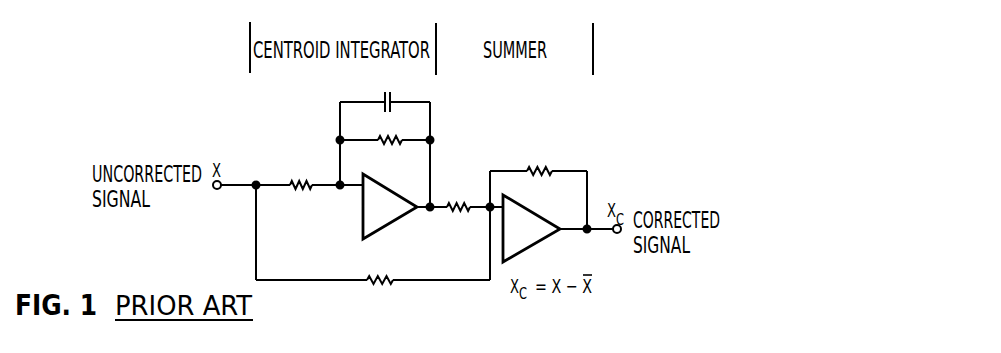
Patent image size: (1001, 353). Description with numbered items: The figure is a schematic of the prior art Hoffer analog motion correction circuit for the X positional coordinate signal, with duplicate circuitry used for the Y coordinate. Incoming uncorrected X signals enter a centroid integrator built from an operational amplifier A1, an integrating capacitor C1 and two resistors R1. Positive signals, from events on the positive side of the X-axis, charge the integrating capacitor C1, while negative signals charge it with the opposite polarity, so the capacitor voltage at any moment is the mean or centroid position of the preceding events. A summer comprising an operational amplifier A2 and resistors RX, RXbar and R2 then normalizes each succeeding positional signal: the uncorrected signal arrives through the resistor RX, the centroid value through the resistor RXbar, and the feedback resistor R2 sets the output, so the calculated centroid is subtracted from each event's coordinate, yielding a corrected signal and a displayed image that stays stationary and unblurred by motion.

The resistor R1 is at (362, 162).
The integrating capacitor C1 is at (385, 136).
The operational amplifier A1 is at (405, 206).
The resistor RXbar is at (468, 183).
The resistor R2 is at (538, 212).
The operational amplifier A2 is at (562, 228).
The resistor RX is at (373, 267).